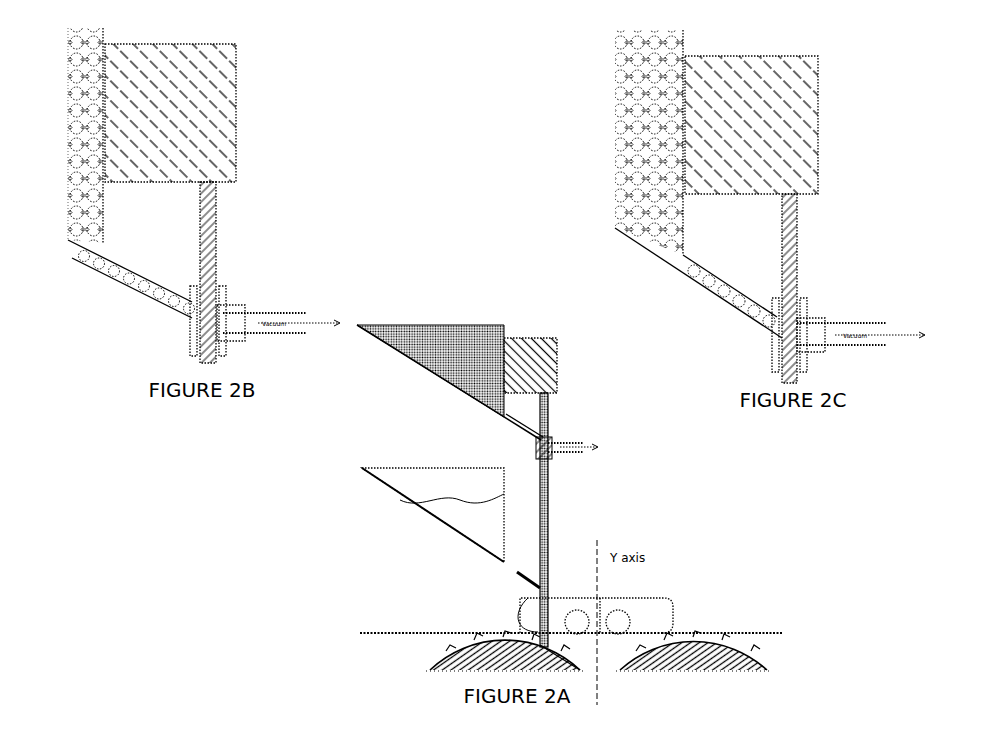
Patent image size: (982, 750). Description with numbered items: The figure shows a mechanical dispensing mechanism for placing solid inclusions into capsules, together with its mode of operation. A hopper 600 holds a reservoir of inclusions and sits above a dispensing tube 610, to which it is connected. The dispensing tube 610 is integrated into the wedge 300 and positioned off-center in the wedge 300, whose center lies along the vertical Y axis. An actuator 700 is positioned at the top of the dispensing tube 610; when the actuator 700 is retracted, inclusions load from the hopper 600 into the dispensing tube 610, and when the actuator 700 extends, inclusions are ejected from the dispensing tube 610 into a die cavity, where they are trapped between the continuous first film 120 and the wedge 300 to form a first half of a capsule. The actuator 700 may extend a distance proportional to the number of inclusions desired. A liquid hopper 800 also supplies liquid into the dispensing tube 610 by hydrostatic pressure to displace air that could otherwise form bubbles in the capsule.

In FIG. 2B, the hopper 600 is at (68, 216).
In FIG. 2C, the hopper 600 is at (613, 181).
In FIG. 2A, the hopper 600 is at (418, 323).
In FIG. 2B, the actuator 700 is at (236, 108).
In FIG. 2C, the actuator 700 is at (817, 128).
In FIG. 2A, the actuator 700 is at (557, 355).
In FIG. 2A, the liquid hopper 800 is at (361, 468).
In FIG. 2A, the dispensing tube 610 is at (528, 600).
In FIG. 2A, the continuous first film 120 is at (396, 634).
In FIG. 2A, the wedge 300 is at (616, 656).